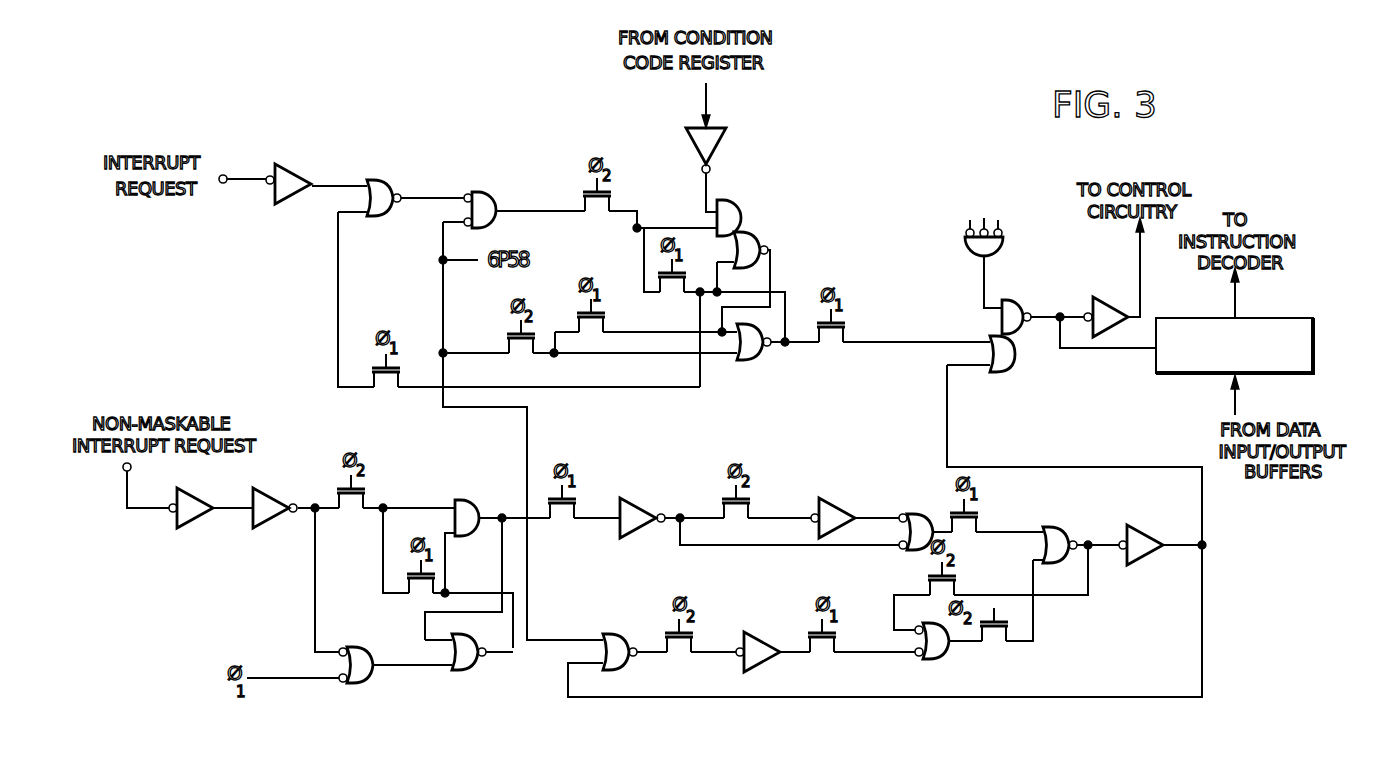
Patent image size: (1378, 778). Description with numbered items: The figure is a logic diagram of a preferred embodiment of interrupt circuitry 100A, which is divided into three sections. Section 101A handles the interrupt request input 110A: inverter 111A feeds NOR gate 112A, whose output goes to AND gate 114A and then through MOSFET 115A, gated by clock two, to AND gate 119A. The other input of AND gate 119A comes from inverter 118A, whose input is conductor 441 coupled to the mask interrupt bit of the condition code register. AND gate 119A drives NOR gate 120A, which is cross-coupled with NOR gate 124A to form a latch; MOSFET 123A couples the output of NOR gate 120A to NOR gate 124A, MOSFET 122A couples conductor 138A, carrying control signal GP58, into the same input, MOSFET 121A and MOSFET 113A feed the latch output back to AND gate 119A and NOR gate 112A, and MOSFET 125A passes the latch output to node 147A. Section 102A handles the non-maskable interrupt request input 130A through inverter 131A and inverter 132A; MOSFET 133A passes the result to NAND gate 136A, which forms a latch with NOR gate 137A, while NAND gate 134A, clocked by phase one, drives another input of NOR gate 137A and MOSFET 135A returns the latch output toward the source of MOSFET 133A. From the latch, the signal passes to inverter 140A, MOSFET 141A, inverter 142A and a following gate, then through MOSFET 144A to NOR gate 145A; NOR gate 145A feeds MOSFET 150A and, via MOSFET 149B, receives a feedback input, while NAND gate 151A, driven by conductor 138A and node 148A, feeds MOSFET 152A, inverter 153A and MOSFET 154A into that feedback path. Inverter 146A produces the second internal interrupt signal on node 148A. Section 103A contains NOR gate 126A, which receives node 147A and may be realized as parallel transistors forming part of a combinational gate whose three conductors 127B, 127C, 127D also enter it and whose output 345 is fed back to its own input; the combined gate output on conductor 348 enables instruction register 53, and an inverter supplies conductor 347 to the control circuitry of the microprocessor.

The interrupt circuitry 100A is at (223, 597).
The section 101A is at (293, 354).
The section 102A is at (355, 752).
The section 103A is at (1128, 404).
The interrupt request input 110A is at (226, 175).
The inverter 111A is at (308, 178).
The NOR gate 112A is at (400, 184).
The MOSFET 113A is at (396, 375).
The AND gate 114A is at (502, 200).
The MOSFET 115A is at (607, 202).
The inverter 118A is at (725, 147).
The AND gate 119A is at (740, 204).
The NOR gate 120A is at (752, 234).
The MOSFET 121A is at (677, 281).
The MOSFET 122A is at (529, 343).
The MOSFET 123A is at (598, 322).
The NOR gate 124A is at (745, 362).
The MOSFET 125A is at (841, 345).
The NOR gate 126A is at (1008, 372).
The conductor 127B is at (970, 220).
The conductor 127C is at (984, 218).
The conductor 127D is at (998, 220).
The non-maskable interrupt request input 130A is at (131, 467).
The inverter 131A is at (203, 526).
The inverter 132A is at (278, 526).
The MOSFET 133A is at (360, 500).
The NAND gate 134A is at (358, 683).
The MOSFET 135A is at (420, 594).
The NAND gate 136A is at (457, 503).
The NOR gate 137A is at (470, 671).
The conductor 138A is at (527, 420).
The inverter 140A is at (630, 505).
The MOSFET 141A is at (745, 510).
The inverter 142A is at (828, 506).
The MOSFET 144A is at (962, 521).
The NOR gate 145A is at (1050, 530).
The inverter 146A is at (1140, 530).
The node 147A is at (956, 340).
The node 148A is at (947, 430).
The MOSFET 149B is at (996, 630).
The MOSFET 150A is at (925, 586).
The NAND gate 151A is at (608, 632).
The MOSFET 152A is at (689, 645).
The inverter 153A is at (752, 672).
The MOSFET 154A is at (826, 655).
The output 345 is at (982, 284).
The conductor 347 is at (1137, 260).
The conductor 348 is at (1092, 360).
The conductor 441 is at (708, 101).
The instruction register 53 is at (1185, 382).